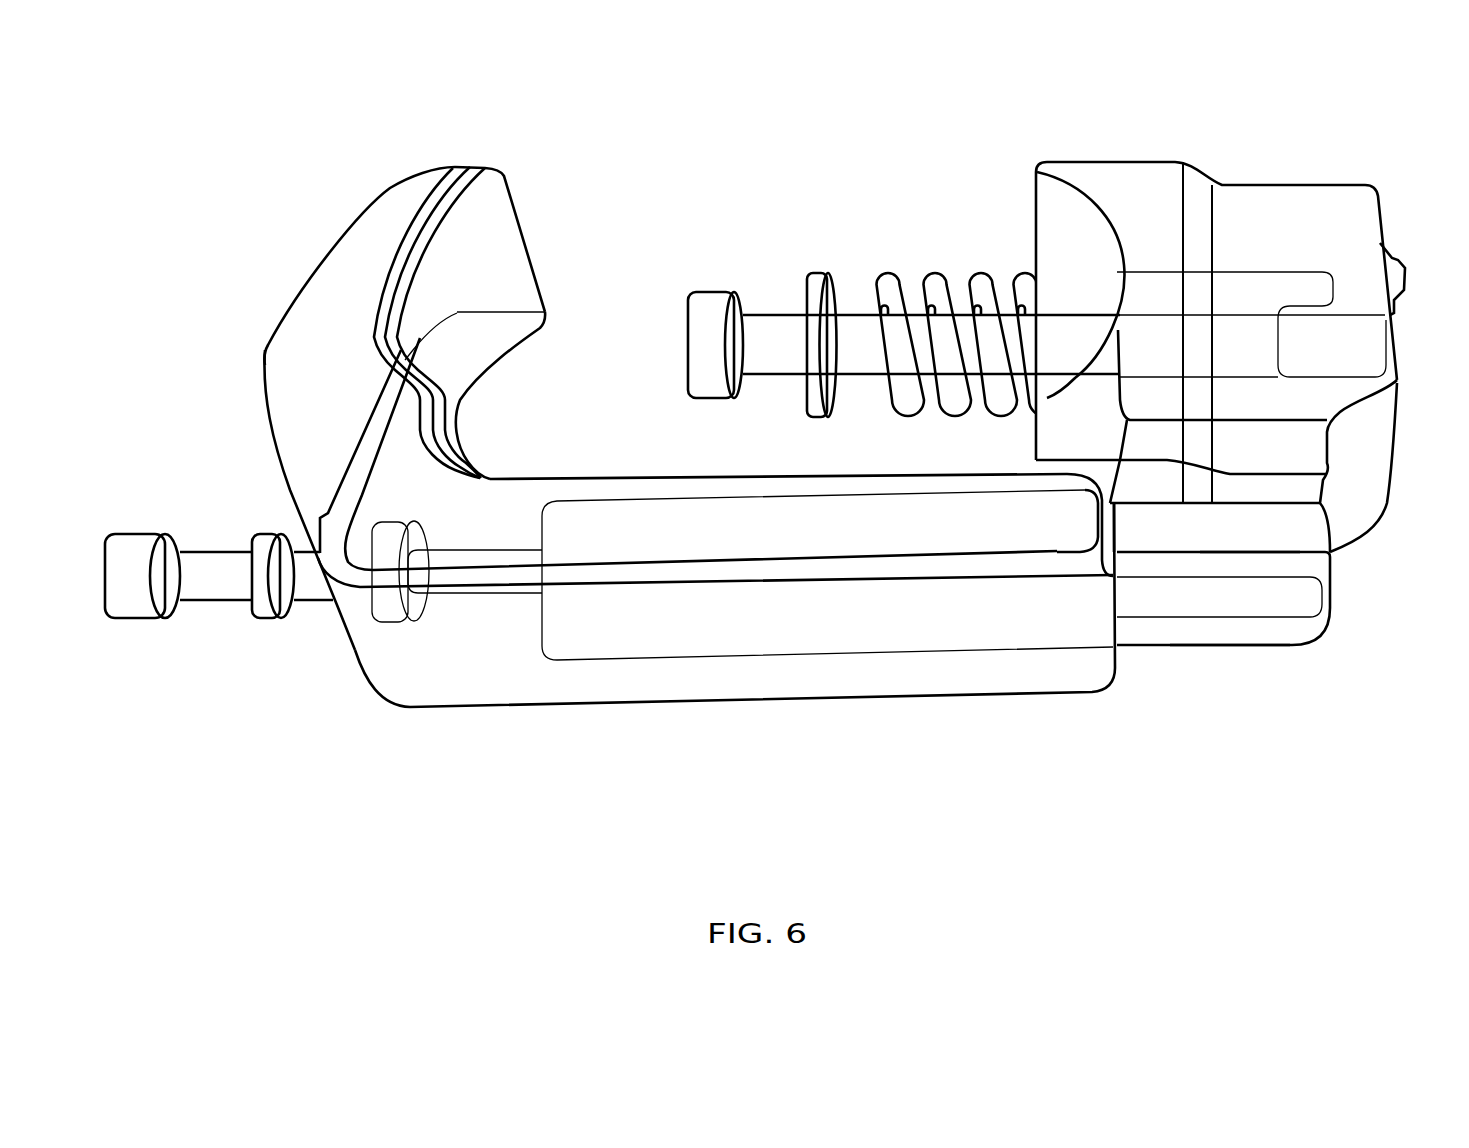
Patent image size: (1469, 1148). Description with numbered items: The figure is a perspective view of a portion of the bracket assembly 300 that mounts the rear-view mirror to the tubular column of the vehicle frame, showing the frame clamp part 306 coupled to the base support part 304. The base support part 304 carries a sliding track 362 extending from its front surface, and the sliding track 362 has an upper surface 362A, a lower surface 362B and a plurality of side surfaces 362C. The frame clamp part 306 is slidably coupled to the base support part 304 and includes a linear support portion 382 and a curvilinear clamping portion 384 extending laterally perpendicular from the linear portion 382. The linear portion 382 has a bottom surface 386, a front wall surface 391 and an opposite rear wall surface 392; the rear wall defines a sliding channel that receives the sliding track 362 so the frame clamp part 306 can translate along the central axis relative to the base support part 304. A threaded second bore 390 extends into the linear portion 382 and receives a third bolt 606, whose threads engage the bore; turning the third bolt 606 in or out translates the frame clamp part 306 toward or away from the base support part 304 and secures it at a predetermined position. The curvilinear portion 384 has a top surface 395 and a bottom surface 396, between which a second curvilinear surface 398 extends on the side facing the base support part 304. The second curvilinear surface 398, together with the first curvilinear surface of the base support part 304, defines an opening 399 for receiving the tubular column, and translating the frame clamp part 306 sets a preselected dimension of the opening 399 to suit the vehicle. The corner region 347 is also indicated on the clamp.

The bracket assembly 300 is at (428, 121).
The base support part 304 is at (1365, 185).
The frame clamp part 306 is at (593, 707).
The corner edge 347 is at (265, 348).
The sliding track 362 is at (1303, 580).
The upper surface 362A is at (1307, 552).
The lower surface 362B is at (1227, 647).
The side surfaces 362C is at (1233, 600).
The linear support portion 382 is at (893, 650).
The curvilinear clamping portion 384 is at (285, 297).
The bottom surface 386 is at (350, 650).
The second bore 390 is at (303, 603).
The front wall surface 391 is at (747, 627).
The rear wall surface 392 is at (575, 478).
The top surface 395 is at (455, 170).
The bottom surface 396 is at (547, 322).
The second curvilinear surface 398 is at (503, 243).
The opening 399 is at (890, 182).
The third bolt 606 is at (223, 577).